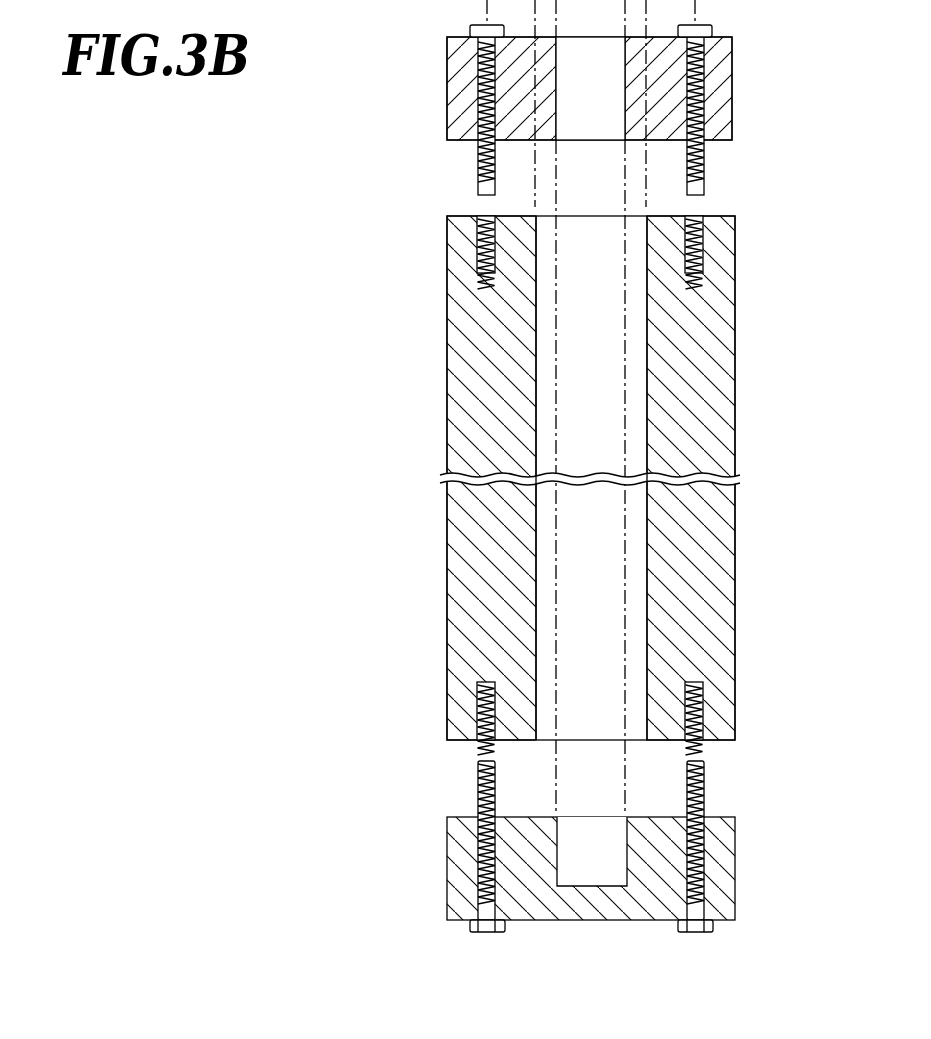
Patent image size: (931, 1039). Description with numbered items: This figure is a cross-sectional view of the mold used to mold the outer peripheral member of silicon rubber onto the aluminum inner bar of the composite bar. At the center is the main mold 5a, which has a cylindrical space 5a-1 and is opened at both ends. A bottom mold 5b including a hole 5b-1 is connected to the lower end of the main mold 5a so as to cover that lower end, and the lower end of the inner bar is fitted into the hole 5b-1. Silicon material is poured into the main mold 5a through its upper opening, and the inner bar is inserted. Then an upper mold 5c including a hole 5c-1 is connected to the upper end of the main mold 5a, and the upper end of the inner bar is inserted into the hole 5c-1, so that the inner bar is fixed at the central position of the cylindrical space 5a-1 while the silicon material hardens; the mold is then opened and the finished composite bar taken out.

The upper mold 5c is at (447, 109).
The hole 5c-1 is at (607, 91).
The main mold 5a is at (447, 430).
The cylindrical space 5a-1 is at (607, 350).
The bottom mold 5b is at (447, 868).
The hole 5b-1 is at (607, 850).